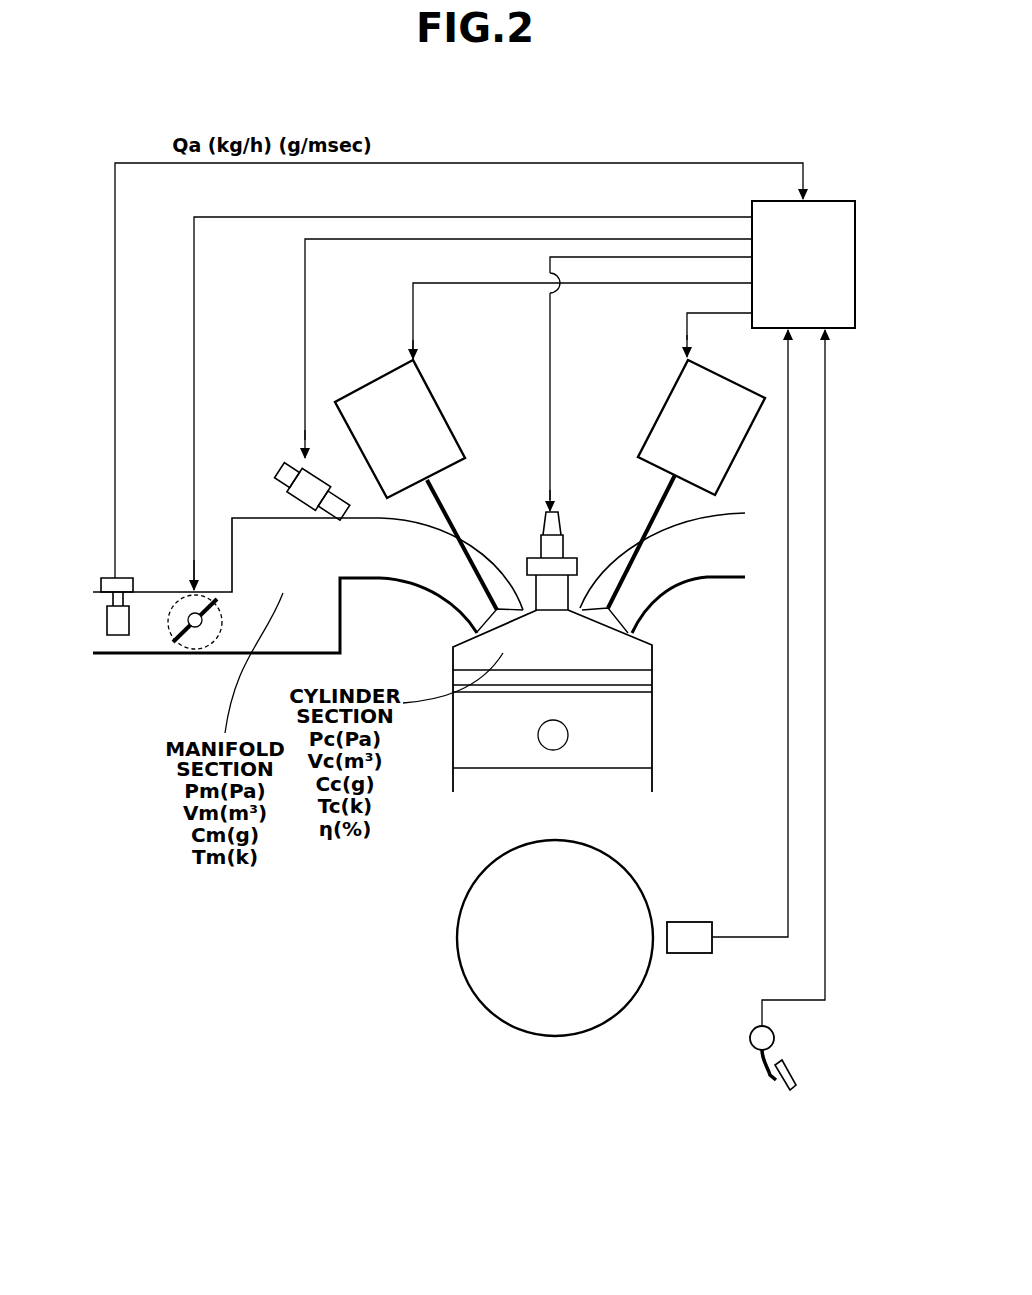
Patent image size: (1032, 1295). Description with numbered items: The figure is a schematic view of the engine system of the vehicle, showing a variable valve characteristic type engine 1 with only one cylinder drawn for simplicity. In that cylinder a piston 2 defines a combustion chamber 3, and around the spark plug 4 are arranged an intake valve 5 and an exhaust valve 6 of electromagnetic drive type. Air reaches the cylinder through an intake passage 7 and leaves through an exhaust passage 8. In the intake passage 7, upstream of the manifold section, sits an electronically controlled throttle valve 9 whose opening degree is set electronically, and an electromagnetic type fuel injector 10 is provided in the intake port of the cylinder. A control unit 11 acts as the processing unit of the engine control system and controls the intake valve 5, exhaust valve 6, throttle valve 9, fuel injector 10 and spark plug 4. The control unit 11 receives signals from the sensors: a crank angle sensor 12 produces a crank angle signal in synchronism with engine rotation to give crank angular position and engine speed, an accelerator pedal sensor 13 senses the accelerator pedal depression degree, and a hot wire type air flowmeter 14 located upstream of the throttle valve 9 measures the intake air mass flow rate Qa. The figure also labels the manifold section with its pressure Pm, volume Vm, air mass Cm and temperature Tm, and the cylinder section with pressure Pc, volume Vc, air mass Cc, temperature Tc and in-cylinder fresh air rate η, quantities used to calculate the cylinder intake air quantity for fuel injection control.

The variable valve characteristic type engine 1 is at (674, 702).
The piston 2 is at (627, 739).
The combustion chamber 3 is at (638, 655).
The spark plug 4 is at (566, 548).
The intake valve 5 is at (443, 512).
The exhaust valve 6 is at (657, 506).
The intake passage 7 is at (376, 570).
The exhaust passage 8 is at (703, 562).
The electronically controlled throttle valve 9 is at (195, 642).
The fuel injector 10 is at (295, 487).
The control unit 11 is at (828, 201).
The crank angle sensor 12 is at (687, 922).
The accelerator pedal sensor 13 is at (752, 1037).
The air flowmeter 14 is at (125, 576).